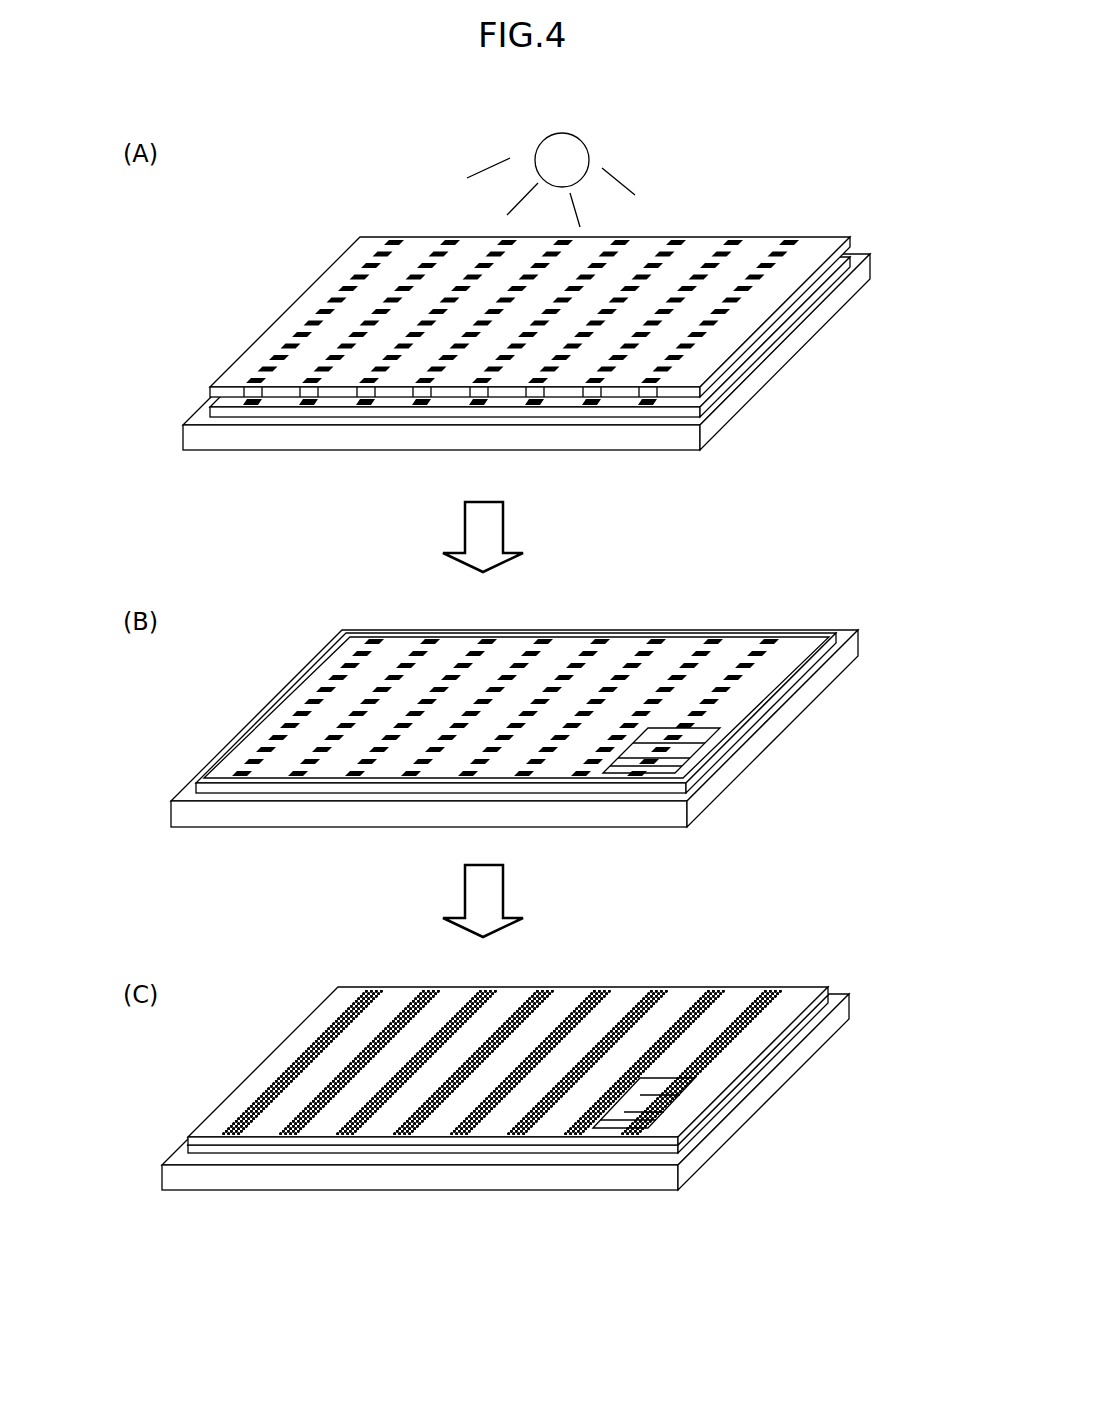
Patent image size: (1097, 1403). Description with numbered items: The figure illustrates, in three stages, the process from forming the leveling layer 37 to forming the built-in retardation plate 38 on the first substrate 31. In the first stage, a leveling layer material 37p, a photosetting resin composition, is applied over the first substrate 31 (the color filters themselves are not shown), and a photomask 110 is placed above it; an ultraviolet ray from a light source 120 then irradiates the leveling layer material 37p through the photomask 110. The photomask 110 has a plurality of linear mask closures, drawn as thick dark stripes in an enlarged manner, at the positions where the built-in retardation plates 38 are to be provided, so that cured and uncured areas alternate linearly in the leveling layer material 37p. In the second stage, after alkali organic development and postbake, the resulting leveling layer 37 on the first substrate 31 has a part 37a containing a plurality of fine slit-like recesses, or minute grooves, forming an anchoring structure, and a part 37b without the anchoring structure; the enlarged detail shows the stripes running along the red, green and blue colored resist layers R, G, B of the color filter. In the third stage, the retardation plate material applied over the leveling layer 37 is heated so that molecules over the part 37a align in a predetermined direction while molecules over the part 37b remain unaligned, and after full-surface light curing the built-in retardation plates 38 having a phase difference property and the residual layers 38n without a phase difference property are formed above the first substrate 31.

The first substrate 31 is at (182, 427).
The leveling layer material 37p is at (213, 408).
The photomask 110 is at (250, 368).
The light source 120 is at (587, 152).
The leveling layer 37 is at (196, 784).
The part of the leveling layer with anchoring structure 37a is at (768, 650).
The part of the leveling layer without anchoring structure 37b is at (737, 652).
The built-in retardation plate 38 is at (760, 1000).
The residual layer 38n is at (728, 1007).
The red colored resist layer R is at (662, 723).
The green colored resist layer G is at (640, 745).
The blue colored resist layer B is at (618, 768).